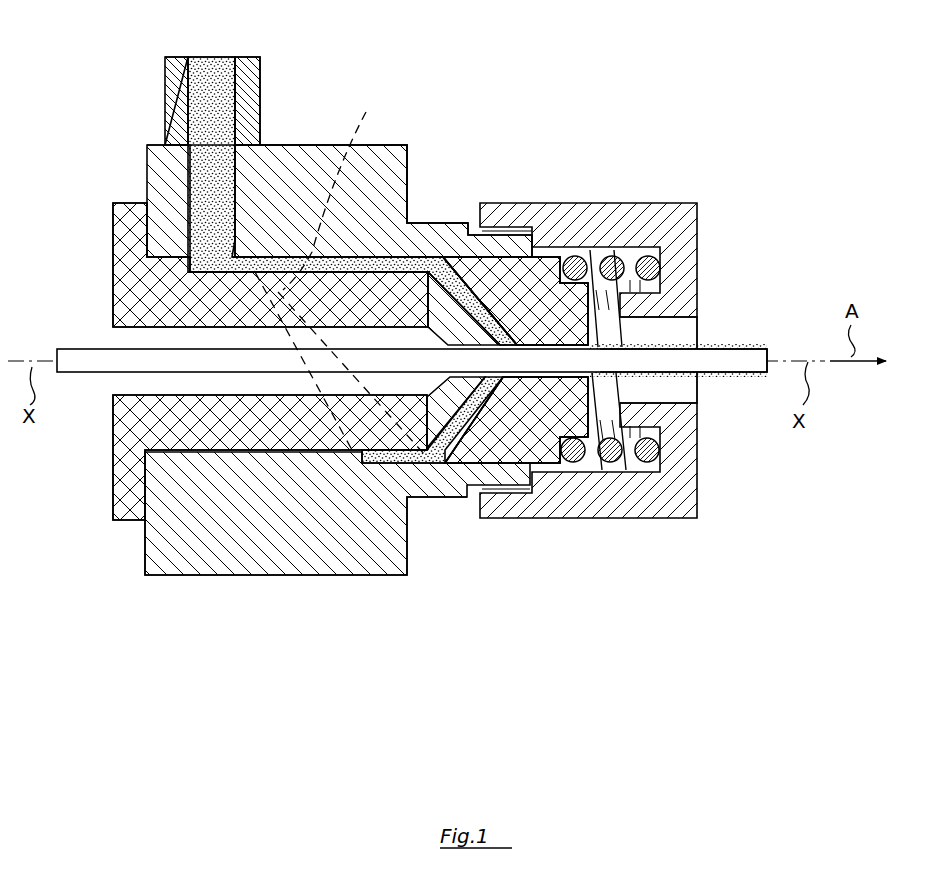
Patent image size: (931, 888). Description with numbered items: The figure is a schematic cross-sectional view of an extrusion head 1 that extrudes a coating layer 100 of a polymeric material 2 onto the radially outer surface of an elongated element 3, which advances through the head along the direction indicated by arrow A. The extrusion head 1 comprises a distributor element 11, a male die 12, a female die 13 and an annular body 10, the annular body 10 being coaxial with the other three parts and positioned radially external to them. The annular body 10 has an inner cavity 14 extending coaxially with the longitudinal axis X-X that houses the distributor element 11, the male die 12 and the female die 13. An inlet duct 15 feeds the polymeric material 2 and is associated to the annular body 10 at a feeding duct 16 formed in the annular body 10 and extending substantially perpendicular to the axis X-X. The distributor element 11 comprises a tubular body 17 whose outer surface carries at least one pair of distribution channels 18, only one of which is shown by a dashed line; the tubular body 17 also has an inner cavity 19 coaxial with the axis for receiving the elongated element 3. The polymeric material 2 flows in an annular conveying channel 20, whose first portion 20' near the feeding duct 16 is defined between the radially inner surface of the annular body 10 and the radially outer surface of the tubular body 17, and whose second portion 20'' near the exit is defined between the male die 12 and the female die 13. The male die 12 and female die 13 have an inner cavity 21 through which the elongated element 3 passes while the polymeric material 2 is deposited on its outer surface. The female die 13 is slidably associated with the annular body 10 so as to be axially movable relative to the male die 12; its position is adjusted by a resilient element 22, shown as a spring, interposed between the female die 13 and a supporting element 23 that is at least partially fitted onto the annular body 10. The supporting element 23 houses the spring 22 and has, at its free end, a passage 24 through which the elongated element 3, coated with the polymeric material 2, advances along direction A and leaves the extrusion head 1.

The extrusion head 1 is at (445, 592).
The polymeric material 2 is at (190, 97).
The elongated element 3 is at (78, 355).
The annular body 10 is at (160, 174).
The distributor element 11 is at (110, 283).
The male die 12 is at (446, 455).
The female die 13 is at (541, 437).
The inner cavity 14 is at (366, 248).
The inlet duct 15 is at (255, 86).
The feeding duct 16 is at (233, 183).
The tubular body 17 is at (128, 263).
The distribution channels 18 is at (340, 274).
The inner cavity 19 is at (120, 385).
The annular conveying channel 20 is at (515, 302).
The first portion of the conveying channel 20' is at (496, 229).
The second portion of the conveying channel 20'' is at (535, 249).
The inner cavity 21 is at (502, 400).
The resilient element 22 is at (618, 470).
The supporting element 23 is at (683, 478).
The passage 24 is at (680, 325).
The coating layer 100 is at (728, 375).